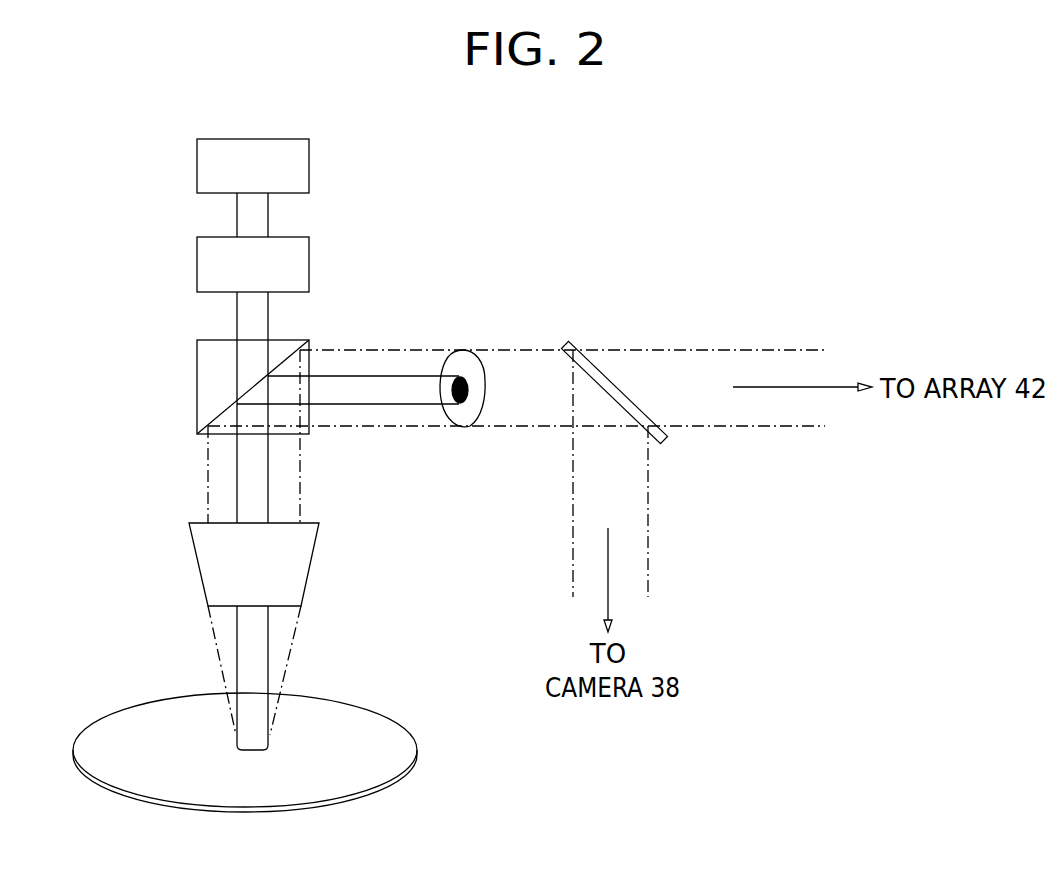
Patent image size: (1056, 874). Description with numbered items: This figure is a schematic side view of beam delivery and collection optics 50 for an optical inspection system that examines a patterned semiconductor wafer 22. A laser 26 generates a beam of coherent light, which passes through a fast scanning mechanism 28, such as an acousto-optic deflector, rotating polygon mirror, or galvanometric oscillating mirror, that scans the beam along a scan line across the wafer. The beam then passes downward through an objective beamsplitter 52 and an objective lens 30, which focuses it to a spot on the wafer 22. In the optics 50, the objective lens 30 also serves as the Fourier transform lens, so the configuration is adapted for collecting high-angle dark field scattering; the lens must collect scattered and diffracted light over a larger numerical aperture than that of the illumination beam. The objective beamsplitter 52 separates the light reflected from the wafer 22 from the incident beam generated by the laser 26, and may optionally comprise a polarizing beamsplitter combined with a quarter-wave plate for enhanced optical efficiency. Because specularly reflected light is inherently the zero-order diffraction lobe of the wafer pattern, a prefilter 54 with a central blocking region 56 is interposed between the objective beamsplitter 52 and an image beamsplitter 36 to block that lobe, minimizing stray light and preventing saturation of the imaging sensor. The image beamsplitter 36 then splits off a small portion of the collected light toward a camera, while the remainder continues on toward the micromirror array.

The patterned semiconductor wafer 22 is at (378, 727).
The laser 26 is at (309, 163).
The fast scanning mechanism 28 is at (309, 263).
The objective lens 30 is at (313, 567).
The image beamsplitter 36 is at (574, 342).
The beam delivery and collection optics 50 is at (865, 218).
The objective beamsplitter 52 is at (197, 408).
The prefilter 54 is at (475, 352).
The central blocking region 56 is at (453, 424).